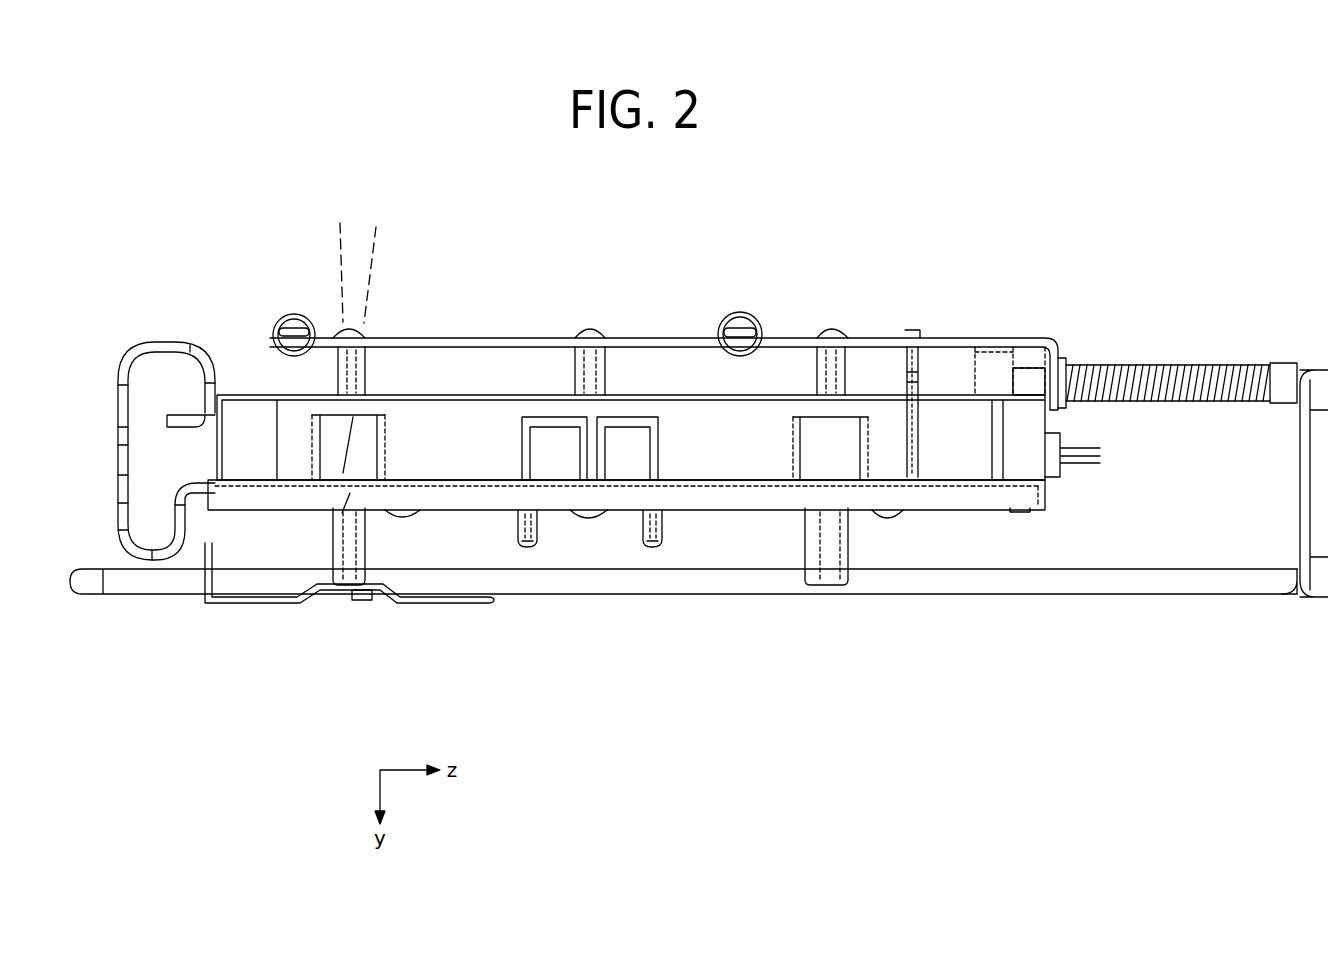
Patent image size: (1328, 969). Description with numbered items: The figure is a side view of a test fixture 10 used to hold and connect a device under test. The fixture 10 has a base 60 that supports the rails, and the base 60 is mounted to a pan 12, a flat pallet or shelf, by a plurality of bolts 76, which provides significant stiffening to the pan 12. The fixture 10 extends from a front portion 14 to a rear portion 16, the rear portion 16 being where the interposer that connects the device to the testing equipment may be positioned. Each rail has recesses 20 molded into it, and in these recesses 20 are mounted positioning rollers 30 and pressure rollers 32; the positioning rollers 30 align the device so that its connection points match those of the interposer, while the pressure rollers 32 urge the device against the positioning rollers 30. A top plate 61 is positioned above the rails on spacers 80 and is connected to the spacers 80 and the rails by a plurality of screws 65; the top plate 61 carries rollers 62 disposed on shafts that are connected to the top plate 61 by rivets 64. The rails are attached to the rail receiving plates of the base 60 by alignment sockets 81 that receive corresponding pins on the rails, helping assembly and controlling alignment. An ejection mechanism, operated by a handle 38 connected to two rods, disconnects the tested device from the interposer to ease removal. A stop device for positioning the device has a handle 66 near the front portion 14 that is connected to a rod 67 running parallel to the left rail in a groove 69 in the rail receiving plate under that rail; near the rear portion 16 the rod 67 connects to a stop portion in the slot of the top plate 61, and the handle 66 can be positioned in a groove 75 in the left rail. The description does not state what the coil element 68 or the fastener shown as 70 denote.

The fixture 10 is at (300, 140).
The pan 12 is at (258, 606).
The front portion 14 is at (80, 479).
The rear portion 16 is at (1258, 617).
The recesses 20 is at (382, 463).
The positioning rollers 30 is at (357, 450).
The pressure rollers 32 is at (632, 455).
The handle 38 is at (137, 597).
The base 60 is at (742, 495).
The top plate 61 is at (945, 338).
The rollers 62 is at (280, 322).
The rivets 64 is at (745, 330).
The screws 65 is at (835, 325).
The handle 66 is at (150, 342).
The rod 67 is at (1066, 360).
The coil spring 68 is at (1140, 364).
The groove 69 is at (1286, 362).
The lower fastener 70 is at (896, 526).
The groove 75 is at (215, 418).
The bolts 76 is at (363, 604).
The spacers 80 is at (338, 383).
The alignment sockets 81 is at (385, 271).